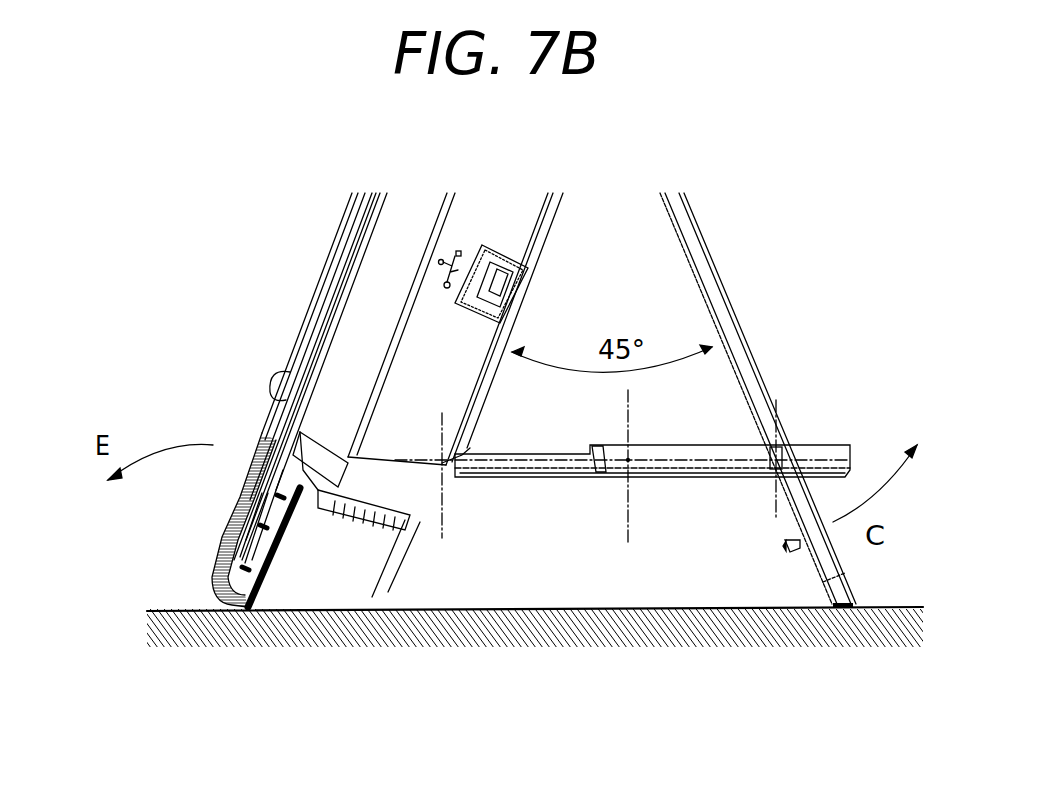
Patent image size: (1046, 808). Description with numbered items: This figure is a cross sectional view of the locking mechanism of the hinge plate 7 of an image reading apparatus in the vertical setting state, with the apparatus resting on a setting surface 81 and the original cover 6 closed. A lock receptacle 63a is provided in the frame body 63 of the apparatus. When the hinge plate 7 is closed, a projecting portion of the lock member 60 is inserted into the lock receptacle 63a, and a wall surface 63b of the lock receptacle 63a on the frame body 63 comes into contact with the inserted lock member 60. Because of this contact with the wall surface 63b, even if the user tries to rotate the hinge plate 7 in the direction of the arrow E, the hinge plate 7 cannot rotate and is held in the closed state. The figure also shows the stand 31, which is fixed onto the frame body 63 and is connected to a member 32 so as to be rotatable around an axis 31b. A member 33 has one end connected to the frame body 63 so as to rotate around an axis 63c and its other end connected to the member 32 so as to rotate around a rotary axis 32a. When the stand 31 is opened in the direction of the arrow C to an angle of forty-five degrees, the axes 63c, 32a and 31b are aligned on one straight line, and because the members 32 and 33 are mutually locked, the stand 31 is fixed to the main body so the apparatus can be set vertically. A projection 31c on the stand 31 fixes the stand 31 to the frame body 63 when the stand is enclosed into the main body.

The original cover 6 is at (327, 259).
The hinge plate 7 is at (237, 455).
The stand 31 is at (713, 268).
The axis 31b is at (775, 460).
The projection 31c is at (795, 550).
The member 32 is at (718, 447).
The rotary axis 32a is at (632, 452).
The member 33 is at (570, 462).
The lock member 60 is at (271, 592).
The frame body 63 is at (440, 475).
The lock receptacle 63a is at (300, 432).
The wall surface 63b is at (233, 502).
The axis 63c is at (458, 452).
The setting surface 81 is at (183, 611).